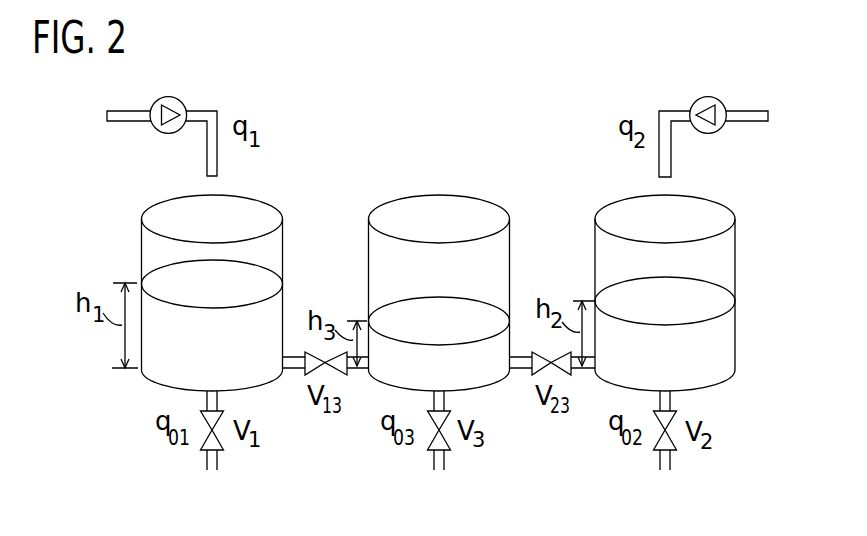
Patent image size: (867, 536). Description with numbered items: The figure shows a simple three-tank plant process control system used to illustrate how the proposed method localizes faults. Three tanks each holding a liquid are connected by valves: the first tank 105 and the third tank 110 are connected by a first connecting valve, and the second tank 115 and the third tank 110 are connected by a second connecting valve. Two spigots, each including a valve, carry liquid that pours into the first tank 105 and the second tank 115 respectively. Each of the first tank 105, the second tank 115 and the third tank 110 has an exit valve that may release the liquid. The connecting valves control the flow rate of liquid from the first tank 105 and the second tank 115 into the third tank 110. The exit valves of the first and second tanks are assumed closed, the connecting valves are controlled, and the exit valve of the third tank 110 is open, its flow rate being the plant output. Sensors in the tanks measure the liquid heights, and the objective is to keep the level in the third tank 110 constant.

The Tank 1 105 is at (240, 211).
The Tank 3 110 is at (468, 210).
The Tank 2 115 is at (697, 212).